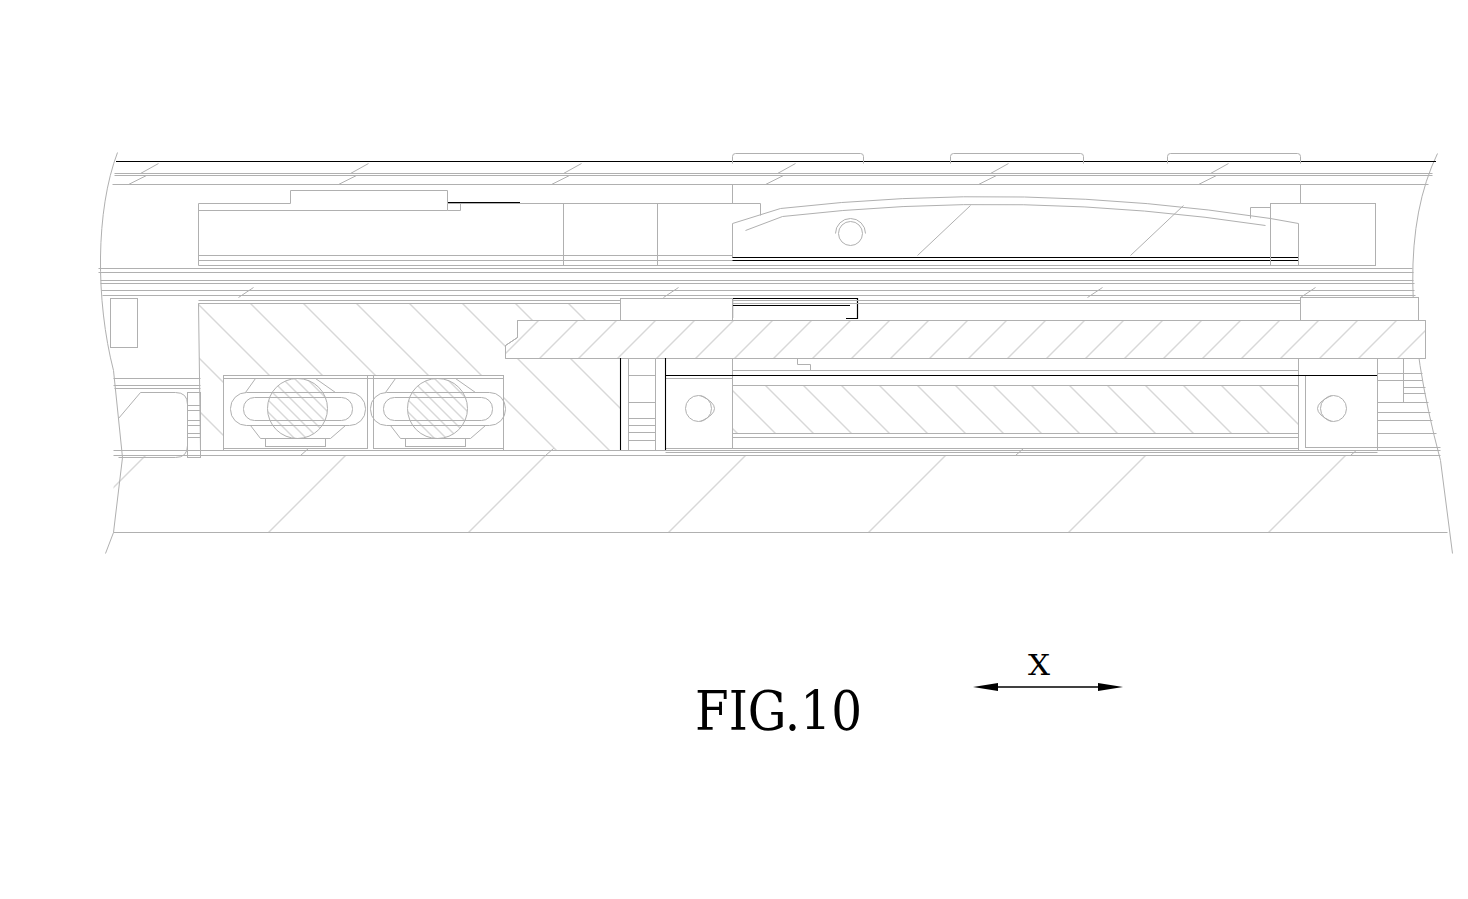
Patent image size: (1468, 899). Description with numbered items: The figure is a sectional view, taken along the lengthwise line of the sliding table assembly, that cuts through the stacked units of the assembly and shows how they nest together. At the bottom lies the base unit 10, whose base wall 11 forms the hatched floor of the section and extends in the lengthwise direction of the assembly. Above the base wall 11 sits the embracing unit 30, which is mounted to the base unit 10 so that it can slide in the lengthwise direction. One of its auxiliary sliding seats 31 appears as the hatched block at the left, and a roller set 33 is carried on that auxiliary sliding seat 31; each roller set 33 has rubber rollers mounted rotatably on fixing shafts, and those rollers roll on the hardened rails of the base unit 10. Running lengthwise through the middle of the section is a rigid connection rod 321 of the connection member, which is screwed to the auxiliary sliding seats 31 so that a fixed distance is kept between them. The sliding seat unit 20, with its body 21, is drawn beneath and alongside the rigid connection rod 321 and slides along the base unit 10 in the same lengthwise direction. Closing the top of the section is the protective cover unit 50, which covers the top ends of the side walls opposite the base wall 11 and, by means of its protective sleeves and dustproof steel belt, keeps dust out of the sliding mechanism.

The base unit 10 is at (776, 407).
The base wall 11 is at (555, 488).
The sliding seat unit 20 is at (1031, 484).
The slider body 21 is at (1057, 384).
The embracing unit 30 is at (410, 253).
The auxiliary sliding seat 31 is at (353, 330).
The roller set 33 is at (308, 420).
The rigid connection rod 321 is at (873, 340).
The protective cover unit 50 is at (650, 187).